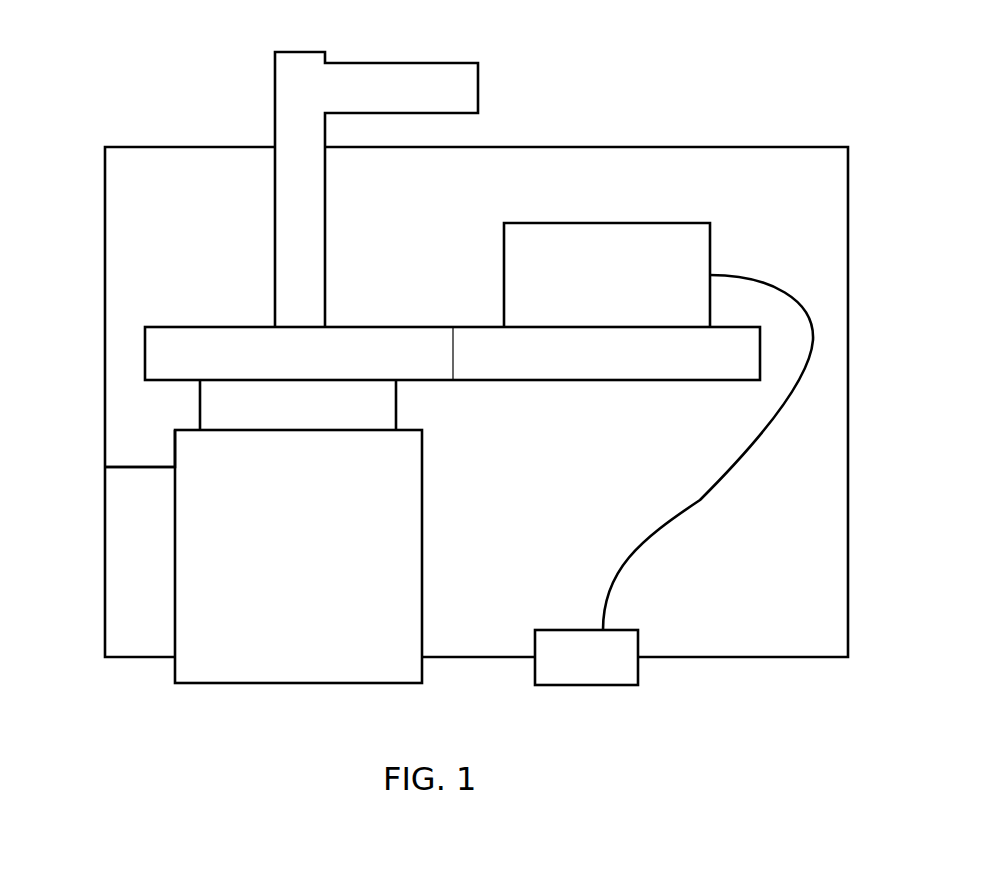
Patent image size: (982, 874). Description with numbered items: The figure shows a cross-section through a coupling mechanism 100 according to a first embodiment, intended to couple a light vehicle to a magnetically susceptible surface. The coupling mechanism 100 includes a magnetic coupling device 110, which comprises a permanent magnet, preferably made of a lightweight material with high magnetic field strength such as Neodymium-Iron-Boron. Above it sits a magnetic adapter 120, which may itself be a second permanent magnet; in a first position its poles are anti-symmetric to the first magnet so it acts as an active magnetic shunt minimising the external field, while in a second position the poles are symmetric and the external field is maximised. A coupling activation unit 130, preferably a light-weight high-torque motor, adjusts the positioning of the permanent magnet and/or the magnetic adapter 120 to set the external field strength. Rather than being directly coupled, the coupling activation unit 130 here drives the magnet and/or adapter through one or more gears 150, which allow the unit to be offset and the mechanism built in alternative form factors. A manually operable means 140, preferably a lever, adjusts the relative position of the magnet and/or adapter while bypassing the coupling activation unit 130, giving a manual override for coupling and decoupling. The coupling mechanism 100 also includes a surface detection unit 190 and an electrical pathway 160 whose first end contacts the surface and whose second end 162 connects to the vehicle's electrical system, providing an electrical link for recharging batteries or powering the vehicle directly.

The coupling mechanism 100 is at (143, 140).
The magnetic coupling device 110 is at (187, 554).
The magnetic adapter 120 is at (207, 407).
The coupling activation unit 130 is at (607, 243).
The manually operable means 140 is at (402, 68).
The gears 150 is at (478, 340).
The electrical pathway 160 is at (130, 465).
The second end 162 is at (103, 468).
The surface detection unit 190 is at (587, 686).